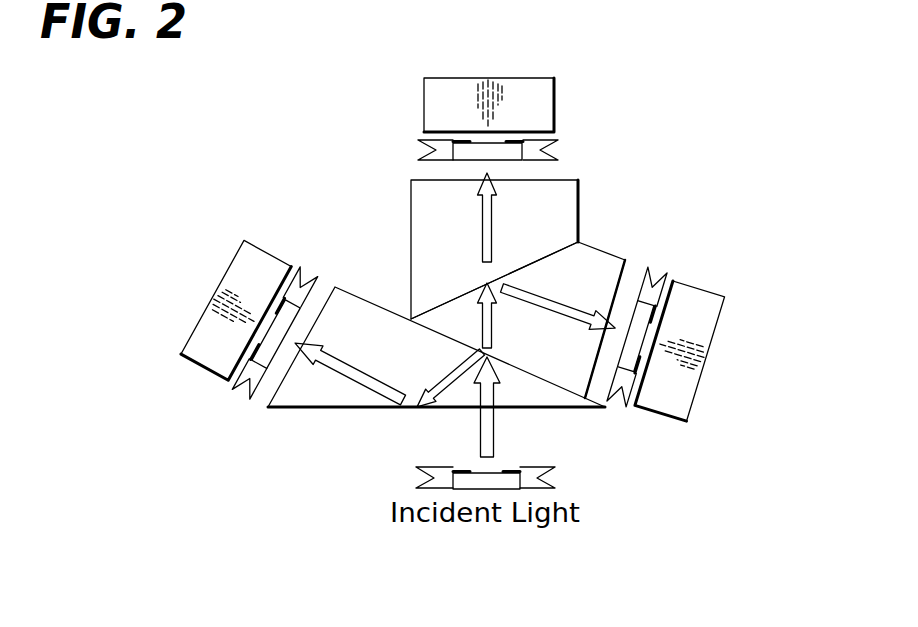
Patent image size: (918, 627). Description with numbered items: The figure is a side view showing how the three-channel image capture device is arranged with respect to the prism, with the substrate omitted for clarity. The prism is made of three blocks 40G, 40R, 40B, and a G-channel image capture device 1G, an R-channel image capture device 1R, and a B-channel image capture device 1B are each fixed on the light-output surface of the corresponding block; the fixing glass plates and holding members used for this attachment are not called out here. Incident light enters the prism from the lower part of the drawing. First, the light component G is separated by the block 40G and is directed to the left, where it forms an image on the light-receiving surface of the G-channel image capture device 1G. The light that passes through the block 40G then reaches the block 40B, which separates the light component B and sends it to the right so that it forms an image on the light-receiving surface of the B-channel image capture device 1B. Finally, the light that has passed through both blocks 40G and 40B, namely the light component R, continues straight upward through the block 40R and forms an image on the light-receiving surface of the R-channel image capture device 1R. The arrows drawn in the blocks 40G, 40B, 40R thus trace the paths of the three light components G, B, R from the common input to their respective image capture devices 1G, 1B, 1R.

The R-channel image capture device 1R is at (543, 104).
The G-channel image capture device 1G is at (240, 283).
The B-channel image capture device 1B is at (710, 323).
The block 40R is at (562, 195).
The block 40G is at (300, 393).
The block 40B is at (630, 259).
The light component R is at (483, 219).
The light component G is at (349, 378).
The light component B is at (580, 302).